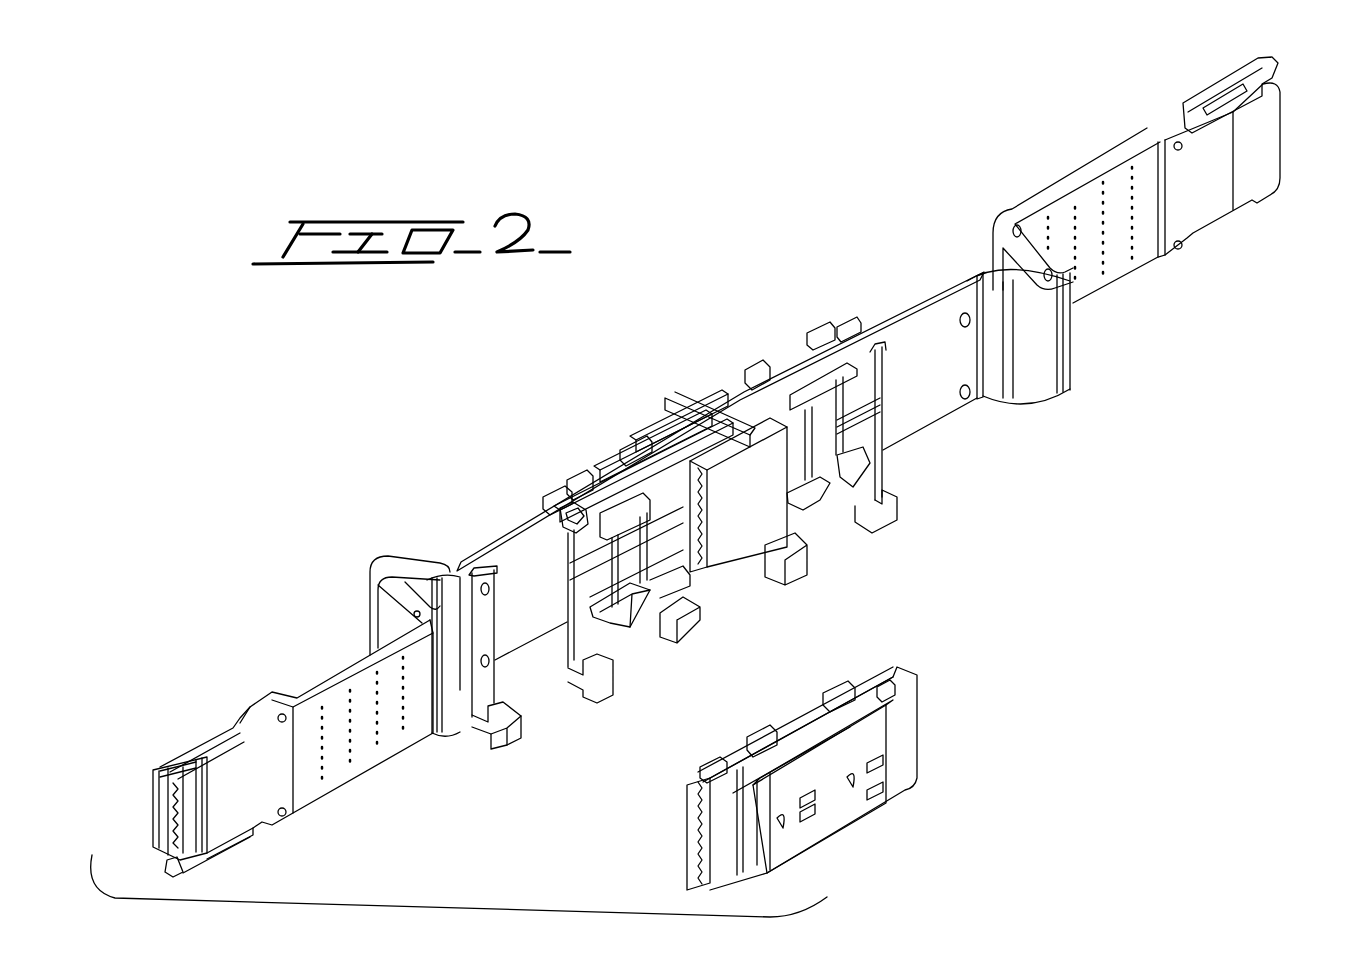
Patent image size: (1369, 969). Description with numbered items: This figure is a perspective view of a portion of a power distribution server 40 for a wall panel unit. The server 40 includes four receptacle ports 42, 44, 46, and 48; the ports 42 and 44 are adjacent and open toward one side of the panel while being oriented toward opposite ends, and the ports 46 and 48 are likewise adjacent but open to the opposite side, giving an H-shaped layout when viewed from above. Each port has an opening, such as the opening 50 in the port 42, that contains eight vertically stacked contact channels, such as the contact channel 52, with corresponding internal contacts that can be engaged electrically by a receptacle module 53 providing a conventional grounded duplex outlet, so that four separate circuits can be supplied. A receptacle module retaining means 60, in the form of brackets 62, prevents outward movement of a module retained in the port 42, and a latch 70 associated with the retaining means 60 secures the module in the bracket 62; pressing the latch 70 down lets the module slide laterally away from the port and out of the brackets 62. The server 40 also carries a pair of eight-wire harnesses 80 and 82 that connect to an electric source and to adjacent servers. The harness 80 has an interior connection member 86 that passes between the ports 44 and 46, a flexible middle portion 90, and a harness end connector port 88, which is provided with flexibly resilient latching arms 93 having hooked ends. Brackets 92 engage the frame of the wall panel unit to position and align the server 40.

The power distribution server 40 is at (645, 378).
The receptacle port 42 is at (730, 537).
The receptacle port 44 is at (770, 517).
The receptacle port 46 is at (720, 397).
The receptacle port 48 is at (638, 435).
The opening 50 is at (688, 460).
The contact channel 52 is at (610, 460).
The receptacle module 53 is at (933, 740).
The receptacle module retaining means 60 is at (620, 630).
The bracket 62 is at (688, 590).
The latch 70 is at (635, 607).
The harness 80 is at (1060, 173).
The harness 82 is at (337, 650).
The interior connection member 86 is at (913, 303).
The harness end connector port 88 is at (1267, 210).
The flexible middle portion 90 is at (1048, 352).
The bracket 92 is at (503, 742).
The latching arm 93 is at (1207, 90).